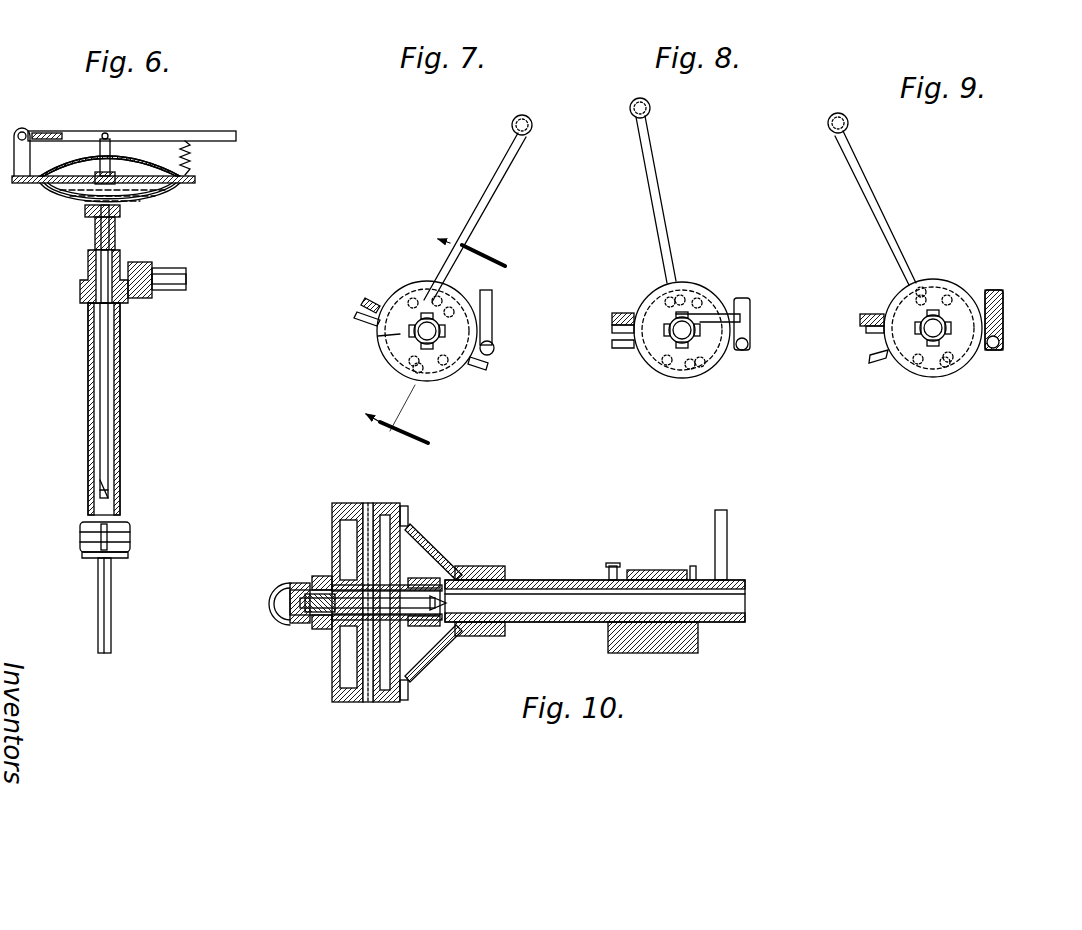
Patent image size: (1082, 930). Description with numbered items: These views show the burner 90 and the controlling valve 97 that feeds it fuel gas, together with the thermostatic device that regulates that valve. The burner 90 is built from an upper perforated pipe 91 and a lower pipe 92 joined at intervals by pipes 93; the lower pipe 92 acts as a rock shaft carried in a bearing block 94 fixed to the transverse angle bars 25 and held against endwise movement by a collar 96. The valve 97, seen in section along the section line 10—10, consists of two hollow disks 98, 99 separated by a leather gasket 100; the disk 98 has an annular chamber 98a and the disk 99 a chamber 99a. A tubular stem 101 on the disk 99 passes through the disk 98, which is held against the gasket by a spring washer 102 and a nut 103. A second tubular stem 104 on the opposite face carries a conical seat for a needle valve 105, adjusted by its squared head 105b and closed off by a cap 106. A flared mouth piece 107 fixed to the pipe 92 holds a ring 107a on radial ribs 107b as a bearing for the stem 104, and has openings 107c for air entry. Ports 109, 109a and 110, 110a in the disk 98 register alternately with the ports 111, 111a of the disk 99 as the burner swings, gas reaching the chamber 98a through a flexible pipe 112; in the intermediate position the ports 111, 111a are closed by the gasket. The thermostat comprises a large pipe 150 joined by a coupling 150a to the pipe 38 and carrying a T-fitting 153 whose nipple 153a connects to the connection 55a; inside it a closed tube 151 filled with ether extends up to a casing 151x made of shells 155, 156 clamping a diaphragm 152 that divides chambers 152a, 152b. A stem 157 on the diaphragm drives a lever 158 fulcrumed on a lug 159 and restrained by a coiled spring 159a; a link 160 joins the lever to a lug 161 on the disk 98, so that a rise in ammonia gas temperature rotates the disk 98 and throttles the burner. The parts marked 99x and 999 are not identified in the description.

In FIG. 7, the section line 10 is at (419, 336).
In FIG. 10, the transverse angle bars 25 is at (698, 643).
In FIG. 6, the pipe 38 is at (96, 600).
In FIG. 6, the connection 55a is at (180, 266).
In FIG. 7, the burner 90 is at (503, 190).
In FIG. 8, the burner 90 is at (655, 172).
In FIG. 9, the burner 90 is at (848, 166).
In FIG. 10, the burner 90 is at (736, 572).
In FIG. 7, the upper pipe 91 is at (533, 127).
In FIG. 8, the upper pipe 91 is at (651, 110).
In FIG. 9, the upper pipe 91 is at (827, 120).
In FIG. 10, the lower pipe 92 is at (558, 580).
In FIG. 7, the connecting pipes 93 is at (488, 188).
In FIG. 8, the connecting pipes 93 is at (658, 197).
In FIG. 9, the connecting pipes 93 is at (866, 182).
In FIG. 10, the connecting pipes 93 is at (727, 526).
In FIG. 10, the bearing block 94 is at (652, 570).
In FIG. 10, the collar 96 is at (613, 563).
In FIG. 10, the controlling valve 97 is at (386, 502).
In FIG. 7, the hollow disk 98 is at (378, 350).
In FIG. 8, the hollow disk 98 is at (634, 341).
In FIG. 9, the hollow disk 98 is at (898, 345).
In FIG. 10, the hollow disk 98 is at (334, 507).
In FIG. 10, the annular chamber 98a is at (340, 530).
In FIG. 10, the hollow disk 99 is at (400, 506).
In FIG. 10, the chamber 99a is at (406, 522).
In FIG. 7, the nipple 99x is at (372, 295).
In FIG. 8, the nipple 99x is at (596, 368).
In FIG. 9, the nipple 99x is at (869, 363).
In FIG. 10, the leather gasket 100 is at (366, 703).
In FIG. 7, the tubular stem 101 is at (441, 329).
In FIG. 8, the tubular stem 101 is at (700, 333).
In FIG. 9, the tubular stem 101 is at (946, 321).
In FIG. 10, the tubular stem 101 is at (300, 622).
In FIG. 7, the spring washer 102 is at (378, 336).
In FIG. 8, the spring washer 102 is at (742, 314).
In FIG. 9, the spring washer 102 is at (940, 314).
In FIG. 10, the spring washer 102 is at (325, 578).
In FIG. 10, the nut 103 is at (320, 630).
In FIG. 10, the second tubular stem 104 is at (440, 592).
In FIG. 10, the needle valve 105 is at (288, 590).
In FIG. 10, the squared head 105b is at (300, 603).
In FIG. 7, the cap 106 is at (446, 338).
In FIG. 8, the cap 106 is at (674, 338).
In FIG. 9, the cap 106 is at (938, 330).
In FIG. 10, the cap 106 is at (262, 611).
In FIG. 10, the flared mouth piece 107 is at (438, 642).
In FIG. 10, the ring 107a is at (445, 548).
In FIG. 10, the radial ribs 107b is at (428, 568).
In FIG. 10, the openings 107c is at (406, 688).
In FIG. 7, the port 109 is at (452, 309).
In FIG. 8, the port 109 is at (700, 298).
In FIG. 9, the port 109 is at (950, 296).
In FIG. 10, the port 109 is at (350, 538).
In FIG. 7, the port 109a is at (410, 363).
In FIG. 8, the port 109a is at (666, 365).
In FIG. 9, the port 109a is at (915, 362).
In FIG. 10, the port 109a is at (345, 662).
In FIG. 7, the port 110 is at (410, 299).
In FIG. 8, the port 110 is at (666, 298).
In FIG. 9, the port 110 is at (917, 297).
In FIG. 7, the port 110a is at (446, 364).
In FIG. 8, the port 110a is at (704, 366).
In FIG. 9, the port 110a is at (952, 362).
In FIG. 7, the port 111 is at (436, 296).
In FIG. 8, the port 111 is at (682, 296).
In FIG. 9, the port 111 is at (922, 288).
In FIG. 10, the port 111 is at (369, 502).
In FIG. 7, the port 111a is at (418, 372).
In FIG. 8, the port 111a is at (690, 369).
In FIG. 9, the port 111a is at (942, 366).
In FIG. 10, the port 111a is at (385, 700).
In FIG. 7, the flexible pipe 112 is at (364, 302).
In FIG. 8, the flexible pipe 112 is at (612, 318).
In FIG. 9, the flexible pipe 112 is at (872, 318).
In FIG. 6, the pipe of large diameter 150 is at (86, 352).
In FIG. 6, the coupling 150a is at (78, 546).
In FIG. 6, the tube 151 is at (115, 235).
In FIG. 6, the casing 151x is at (157, 195).
In FIG. 6, the diaphragm 152 is at (54, 176).
In FIG. 6, the lower chamber 152a is at (66, 196).
In FIG. 6, the upper chamber 152b is at (140, 167).
In FIG. 6, the T-fitting 153 is at (82, 285).
In FIG. 6, the nipple 153a is at (145, 292).
In FIG. 6, the concave-convex shell 155 is at (56, 186).
In FIG. 6, the concave-convex shell 156 is at (71, 160).
In FIG. 6, the stem 157 is at (112, 153).
In FIG. 6, the lever 158 is at (239, 131).
In FIG. 6, the lug 159 is at (32, 130).
In FIG. 6, the coiled spring 159a is at (192, 159).
In FIG. 7, the link 160 is at (490, 296).
In FIG. 8, the link 160 is at (748, 300).
In FIG. 9, the link 160 is at (1003, 292).
In FIG. 7, the lug 161 is at (493, 353).
In FIG. 8, the lug 161 is at (740, 352).
In FIG. 9, the lug 161 is at (1000, 350).
In FIG. 7, the tab 999 is at (485, 371).
In FIG. 8, the tab 999 is at (752, 322).
In FIG. 9, the tab 999 is at (984, 292).